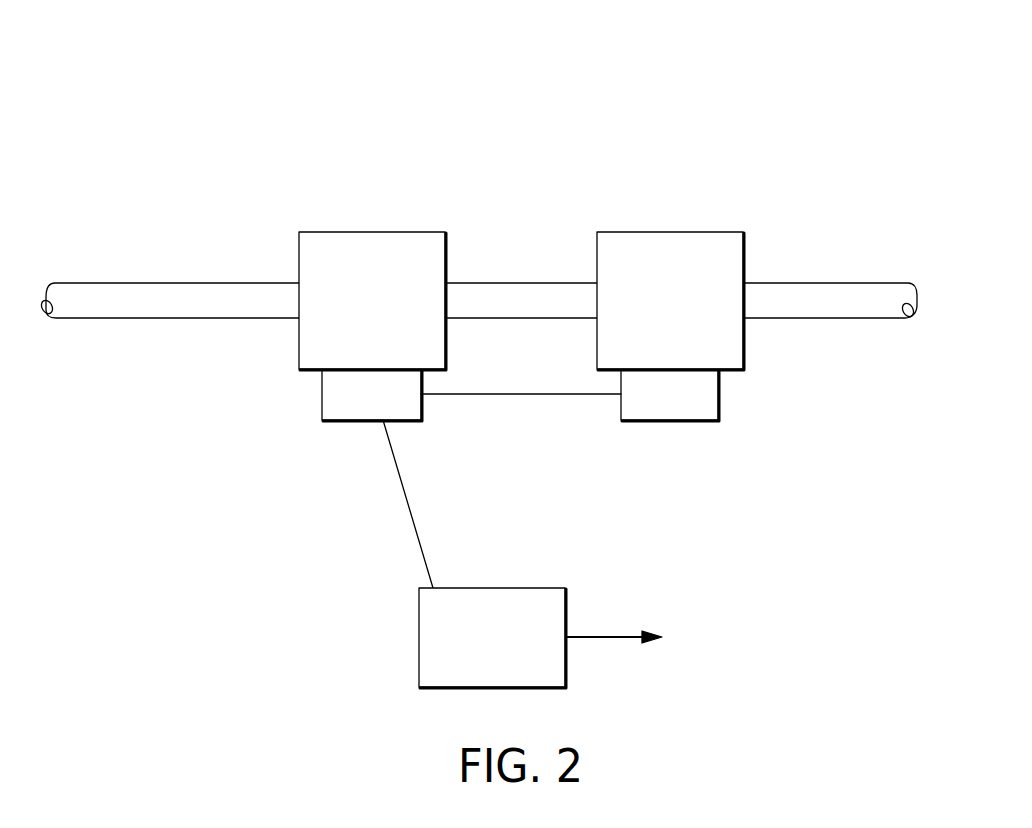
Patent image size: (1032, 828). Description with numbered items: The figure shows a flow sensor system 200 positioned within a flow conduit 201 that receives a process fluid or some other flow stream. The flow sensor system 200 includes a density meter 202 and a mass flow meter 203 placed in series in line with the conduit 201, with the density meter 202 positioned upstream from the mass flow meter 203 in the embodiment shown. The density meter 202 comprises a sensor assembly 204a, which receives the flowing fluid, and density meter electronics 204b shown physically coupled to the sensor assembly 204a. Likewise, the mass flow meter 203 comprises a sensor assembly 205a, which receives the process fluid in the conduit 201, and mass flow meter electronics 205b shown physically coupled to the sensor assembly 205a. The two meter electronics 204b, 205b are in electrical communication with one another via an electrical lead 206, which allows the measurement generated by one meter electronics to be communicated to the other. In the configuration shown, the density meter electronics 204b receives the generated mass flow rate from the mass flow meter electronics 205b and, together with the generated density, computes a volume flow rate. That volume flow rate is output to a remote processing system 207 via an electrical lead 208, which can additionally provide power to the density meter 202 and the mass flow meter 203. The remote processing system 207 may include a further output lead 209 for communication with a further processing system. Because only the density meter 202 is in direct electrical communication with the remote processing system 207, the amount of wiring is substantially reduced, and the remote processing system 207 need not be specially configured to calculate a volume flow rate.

The flow sensor system 200 is at (752, 92).
The flow conduit 201 is at (193, 282).
The density meter 202 is at (392, 230).
The mass flow meter 203 is at (663, 230).
The sensor assembly 204a is at (402, 309).
The density meter electronics 204b is at (402, 407).
The sensor assembly 205a is at (699, 309).
The mass flow meter electronics 205b is at (699, 407).
The electrical lead 206 is at (522, 398).
The remote processing system 207 is at (517, 649).
The electrical lead 208 is at (422, 532).
The output lead 209 is at (630, 636).